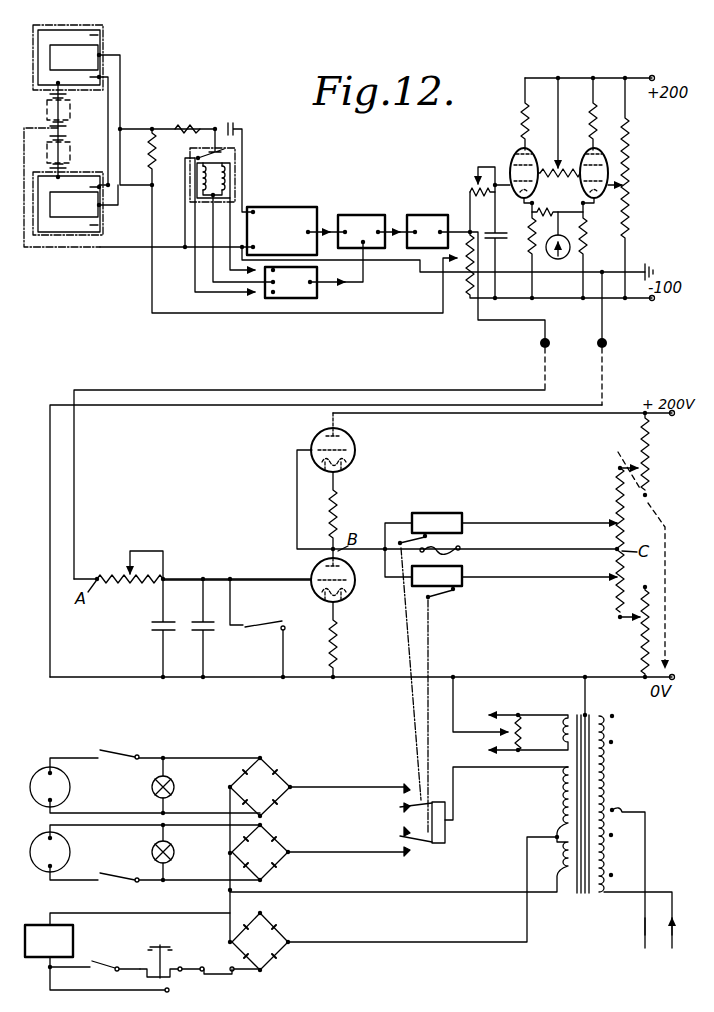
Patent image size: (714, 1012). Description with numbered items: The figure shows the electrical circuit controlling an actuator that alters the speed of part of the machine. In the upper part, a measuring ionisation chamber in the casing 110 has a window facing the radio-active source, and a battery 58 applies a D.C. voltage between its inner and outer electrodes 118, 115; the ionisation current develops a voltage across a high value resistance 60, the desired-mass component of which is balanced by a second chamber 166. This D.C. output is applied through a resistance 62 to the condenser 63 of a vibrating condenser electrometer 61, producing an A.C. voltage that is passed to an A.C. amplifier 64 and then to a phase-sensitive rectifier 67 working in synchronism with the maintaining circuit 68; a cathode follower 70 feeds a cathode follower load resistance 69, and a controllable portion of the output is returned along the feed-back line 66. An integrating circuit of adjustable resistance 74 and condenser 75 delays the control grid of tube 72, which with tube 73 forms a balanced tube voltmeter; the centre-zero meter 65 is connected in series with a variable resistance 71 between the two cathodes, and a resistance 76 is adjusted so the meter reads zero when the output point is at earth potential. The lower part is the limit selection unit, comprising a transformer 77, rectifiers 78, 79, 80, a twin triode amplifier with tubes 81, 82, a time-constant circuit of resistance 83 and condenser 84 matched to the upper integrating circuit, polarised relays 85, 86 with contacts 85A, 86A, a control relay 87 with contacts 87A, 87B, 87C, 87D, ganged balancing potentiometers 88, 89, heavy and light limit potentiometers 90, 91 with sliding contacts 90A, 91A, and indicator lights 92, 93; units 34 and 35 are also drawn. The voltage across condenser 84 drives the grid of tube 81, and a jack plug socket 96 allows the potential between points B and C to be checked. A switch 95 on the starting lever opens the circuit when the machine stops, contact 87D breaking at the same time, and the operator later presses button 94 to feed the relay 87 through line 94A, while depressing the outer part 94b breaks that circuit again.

The casing 110 is at (98, 30).
The outer electrode 115 is at (104, 52).
The inner electrode 118 is at (104, 74).
The battery 58 is at (72, 97).
The balancing chamber 166 is at (73, 237).
The high value resistance 60 is at (150, 132).
The resistance 62 is at (185, 119).
The vibrating condenser electrometer 61 is at (189, 193).
The condenser 63 is at (223, 152).
The A.C. amplifier 64 is at (296, 231).
The phase-sensitive rectifier 67 is at (359, 218).
The cathode follower 70 is at (425, 218).
The maintaining circuit 68 is at (292, 291).
The feed-back line 66 is at (342, 312).
The cathode follower load resistance 69 is at (461, 266).
The resistance 74 is at (472, 189).
The condenser 75 is at (507, 236).
The tube 72 is at (512, 155).
The tube 73 is at (582, 152).
The resistance 76 is at (631, 177).
The variable resistance 71 is at (548, 222).
The meter 65 is at (568, 240).
The tube 82 is at (356, 450).
The tube 81 is at (352, 592).
The resistance 83 is at (115, 572).
The condenser 84 is at (183, 628).
The contact 87A is at (256, 628).
The polarised relay 85 is at (435, 514).
The polarised relay 86 is at (461, 588).
The jack plug socket 96 is at (462, 553).
The sliding contact 91A is at (513, 523).
The sliding contact 90A is at (528, 578).
The potentiometer 91 is at (612, 490).
The potentiometer 90 is at (612, 595).
The balancing potentiometer 89 is at (640, 430).
The balancing potentiometer 88 is at (641, 636).
The transformer 77 is at (592, 768).
The contact 85A is at (441, 800).
The contact 86A is at (441, 845).
The motor 35 is at (46, 770).
The motor 34 is at (49, 868).
The contact 87B is at (125, 741).
The contact 87C is at (113, 872).
The contact 87D is at (107, 962).
The indicator light 93 is at (175, 789).
The indicator light 92 is at (175, 853).
The rectifier 80 is at (277, 776).
The rectifier 79 is at (272, 834).
The rectifier 78 is at (270, 922).
The control circuit relay 87 is at (40, 958).
The button 94 is at (170, 950).
The outer part 94b is at (175, 963).
The line 94A is at (101, 990).
The switch 95 is at (215, 977).